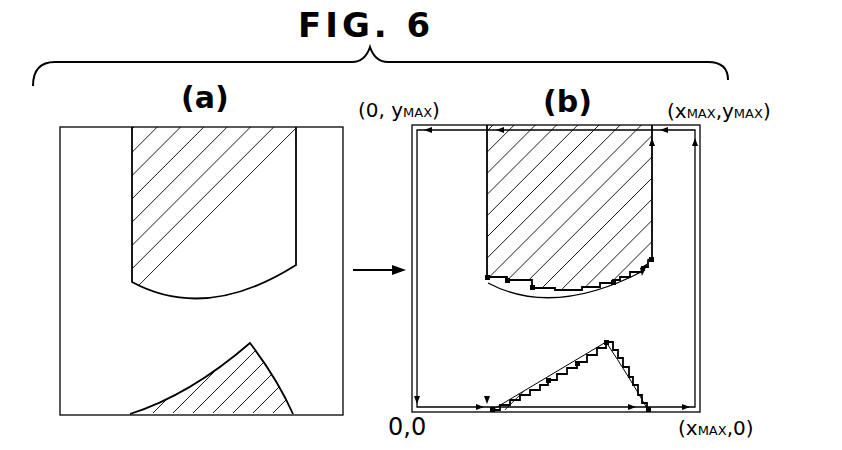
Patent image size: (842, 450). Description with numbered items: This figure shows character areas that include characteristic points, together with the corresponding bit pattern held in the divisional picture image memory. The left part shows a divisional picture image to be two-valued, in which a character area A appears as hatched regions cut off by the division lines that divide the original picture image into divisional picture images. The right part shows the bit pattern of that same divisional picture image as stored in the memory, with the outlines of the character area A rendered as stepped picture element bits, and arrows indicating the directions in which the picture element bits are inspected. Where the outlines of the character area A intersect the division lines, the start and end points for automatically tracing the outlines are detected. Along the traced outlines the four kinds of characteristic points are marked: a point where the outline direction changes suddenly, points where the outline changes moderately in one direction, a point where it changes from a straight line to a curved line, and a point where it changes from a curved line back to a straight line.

The character area A is at (230, 376).